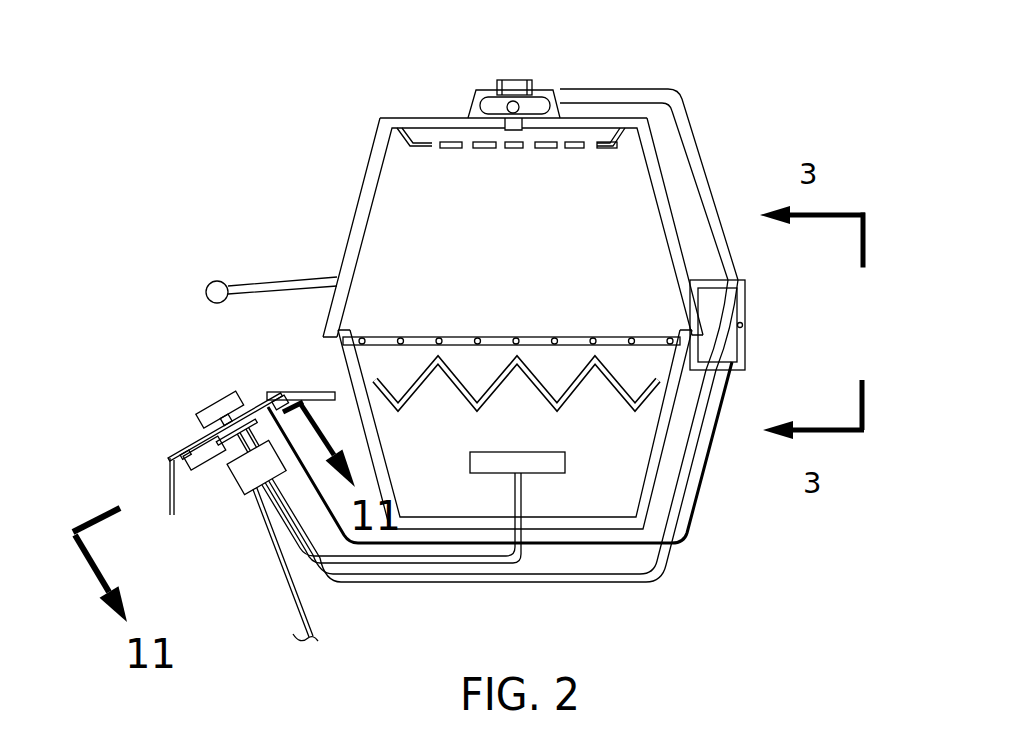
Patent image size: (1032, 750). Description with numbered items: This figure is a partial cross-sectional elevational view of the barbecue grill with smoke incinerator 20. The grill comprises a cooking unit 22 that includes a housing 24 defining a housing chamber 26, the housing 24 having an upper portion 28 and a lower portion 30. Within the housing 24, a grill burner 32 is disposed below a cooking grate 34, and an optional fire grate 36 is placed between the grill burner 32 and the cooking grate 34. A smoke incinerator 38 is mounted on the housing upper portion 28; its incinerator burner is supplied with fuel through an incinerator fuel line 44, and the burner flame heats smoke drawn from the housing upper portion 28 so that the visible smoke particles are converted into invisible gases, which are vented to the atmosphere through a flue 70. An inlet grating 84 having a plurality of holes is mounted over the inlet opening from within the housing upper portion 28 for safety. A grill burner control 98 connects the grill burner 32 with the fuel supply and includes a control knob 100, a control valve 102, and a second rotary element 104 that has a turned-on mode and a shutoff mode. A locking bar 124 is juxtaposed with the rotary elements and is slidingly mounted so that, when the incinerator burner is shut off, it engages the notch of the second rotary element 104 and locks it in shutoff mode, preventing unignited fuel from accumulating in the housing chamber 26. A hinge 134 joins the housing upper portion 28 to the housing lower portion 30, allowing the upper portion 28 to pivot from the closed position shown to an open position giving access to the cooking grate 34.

The barbecue grill with smoke incinerator 20 is at (212, 135).
The cooking unit 22 is at (373, 143).
The housing 24 is at (360, 187).
The housing chamber 26 is at (540, 282).
The housing upper portion 28 is at (350, 235).
The housing lower portion 30 is at (338, 363).
The grill burner 32 is at (538, 452).
The cooking grate 34 is at (555, 337).
The fire grate 36 is at (467, 402).
The smoke incinerator 38 is at (468, 110).
The incinerator fuel line 44 is at (665, 562).
The flue 70 is at (532, 83).
The inlet grating 84 is at (510, 150).
The grill burner control 98 is at (225, 392).
The control knob 100 is at (202, 403).
The control valve 102 is at (247, 497).
The second rotary element 104 is at (237, 450).
The locking bar 124 is at (207, 470).
The hinge 134 is at (747, 362).